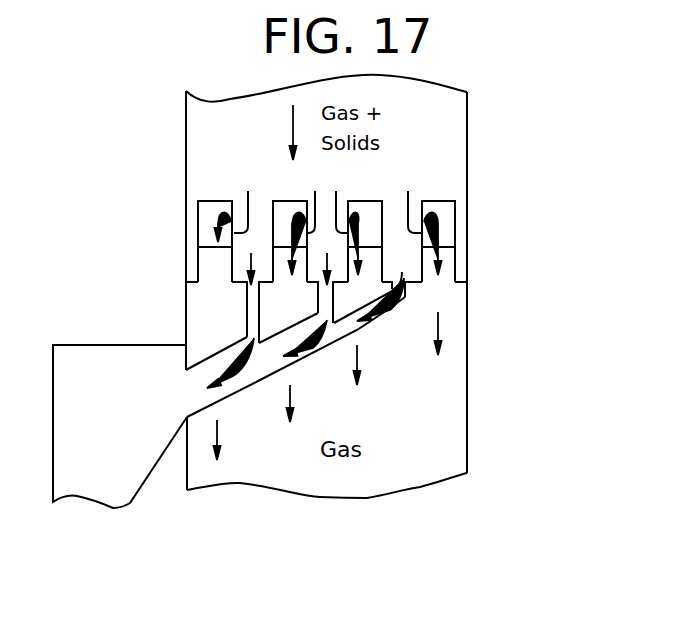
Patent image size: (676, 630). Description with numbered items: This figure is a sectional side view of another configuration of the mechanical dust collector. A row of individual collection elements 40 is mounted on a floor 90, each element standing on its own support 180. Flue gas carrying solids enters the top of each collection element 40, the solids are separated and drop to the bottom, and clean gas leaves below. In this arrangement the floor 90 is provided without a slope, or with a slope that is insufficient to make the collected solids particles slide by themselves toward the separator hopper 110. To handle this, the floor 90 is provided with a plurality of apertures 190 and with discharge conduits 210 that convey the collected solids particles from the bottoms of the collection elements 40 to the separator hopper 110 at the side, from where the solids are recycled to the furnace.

The collection element 40 is at (443, 210).
The floor 90 is at (463, 292).
The separator hopper 110 is at (82, 352).
The support 180 is at (450, 258).
The aperture 190 is at (405, 297).
The discharge conduit 210 is at (262, 365).